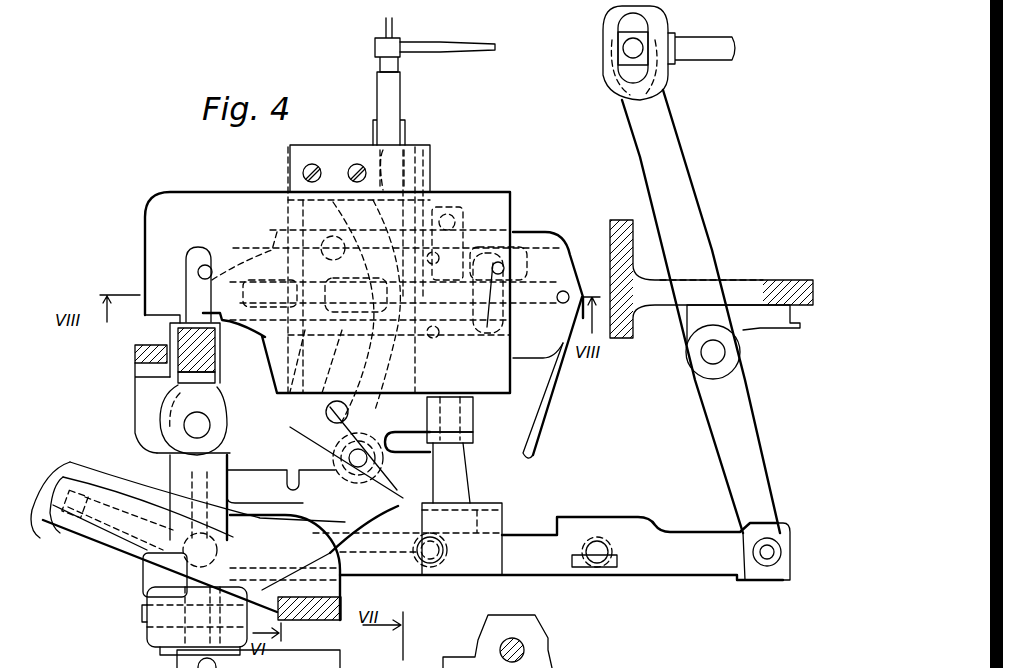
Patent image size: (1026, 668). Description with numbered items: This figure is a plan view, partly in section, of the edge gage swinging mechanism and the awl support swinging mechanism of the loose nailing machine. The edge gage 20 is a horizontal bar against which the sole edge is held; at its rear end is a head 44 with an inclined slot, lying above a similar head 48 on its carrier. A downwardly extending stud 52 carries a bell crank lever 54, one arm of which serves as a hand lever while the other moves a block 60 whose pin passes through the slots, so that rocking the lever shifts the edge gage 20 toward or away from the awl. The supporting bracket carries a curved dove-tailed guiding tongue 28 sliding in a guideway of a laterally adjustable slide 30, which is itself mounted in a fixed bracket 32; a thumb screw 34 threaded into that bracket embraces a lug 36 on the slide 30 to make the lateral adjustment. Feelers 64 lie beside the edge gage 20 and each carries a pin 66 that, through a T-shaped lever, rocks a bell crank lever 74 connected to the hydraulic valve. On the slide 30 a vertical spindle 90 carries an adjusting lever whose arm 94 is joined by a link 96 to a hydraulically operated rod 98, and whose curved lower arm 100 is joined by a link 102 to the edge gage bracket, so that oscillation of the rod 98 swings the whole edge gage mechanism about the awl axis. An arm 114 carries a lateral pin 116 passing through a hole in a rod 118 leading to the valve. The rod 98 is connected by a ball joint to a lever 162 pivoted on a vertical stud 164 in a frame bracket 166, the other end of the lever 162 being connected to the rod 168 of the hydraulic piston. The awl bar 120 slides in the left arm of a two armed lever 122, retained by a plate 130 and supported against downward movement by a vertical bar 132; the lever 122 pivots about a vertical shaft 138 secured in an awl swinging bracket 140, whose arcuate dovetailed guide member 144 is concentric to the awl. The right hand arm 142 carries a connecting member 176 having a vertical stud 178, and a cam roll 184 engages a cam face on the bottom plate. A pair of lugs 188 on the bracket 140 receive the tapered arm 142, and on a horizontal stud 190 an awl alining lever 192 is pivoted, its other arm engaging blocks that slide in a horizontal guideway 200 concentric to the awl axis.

The edge gage 20 is at (218, 262).
The dove-tailed guiding tongue 28 is at (376, 410).
The slide 30 is at (420, 447).
The fixed bracket 32 is at (535, 388).
The thumb screw 34 is at (462, 488).
The lug 36 is at (470, 410).
The head 44 is at (583, 667).
The head 48 is at (715, 659).
The stud 52 is at (565, 290).
The bell crank lever 54 is at (564, 352).
The block 60 is at (636, 667).
The feeler 64 is at (200, 270).
The pin 66 is at (605, 660).
The bell crank lever 74 is at (436, 667).
The vertical spindle 90 is at (360, 455).
The arm 94 is at (398, 523).
The link 96 is at (588, 570).
The hydraulically operated rod 98 is at (710, 562).
The curved lower arm 100 is at (428, 487).
The link 102 is at (455, 215).
The arm 114 is at (398, 96).
The lateral pin 116 is at (392, 28).
The rod 118 is at (452, 45).
The awl bar 120 is at (208, 342).
The two armed lever 122 is at (216, 416).
The plate 130 is at (140, 344).
The vertical bar 132 is at (150, 362).
The vertical shaft 138 is at (210, 428).
The awl swinging bracket 140 is at (72, 562).
The right hand arm 142 is at (192, 487).
The dovetailed arcuate guide member 144 is at (118, 567).
The lever 162 is at (745, 432).
The vertical stud 164 is at (726, 353).
The bracket 166 is at (742, 316).
The rod 168 is at (702, 55).
The connecting member 176 is at (283, 454).
The vertical stud 178 is at (330, 667).
The cam roll 184 is at (286, 656).
The lugs 188 is at (153, 637).
The horizontal stud 190 is at (148, 612).
The awl alining lever 192 is at (178, 648).
The horizontal guideway 200 is at (70, 552).